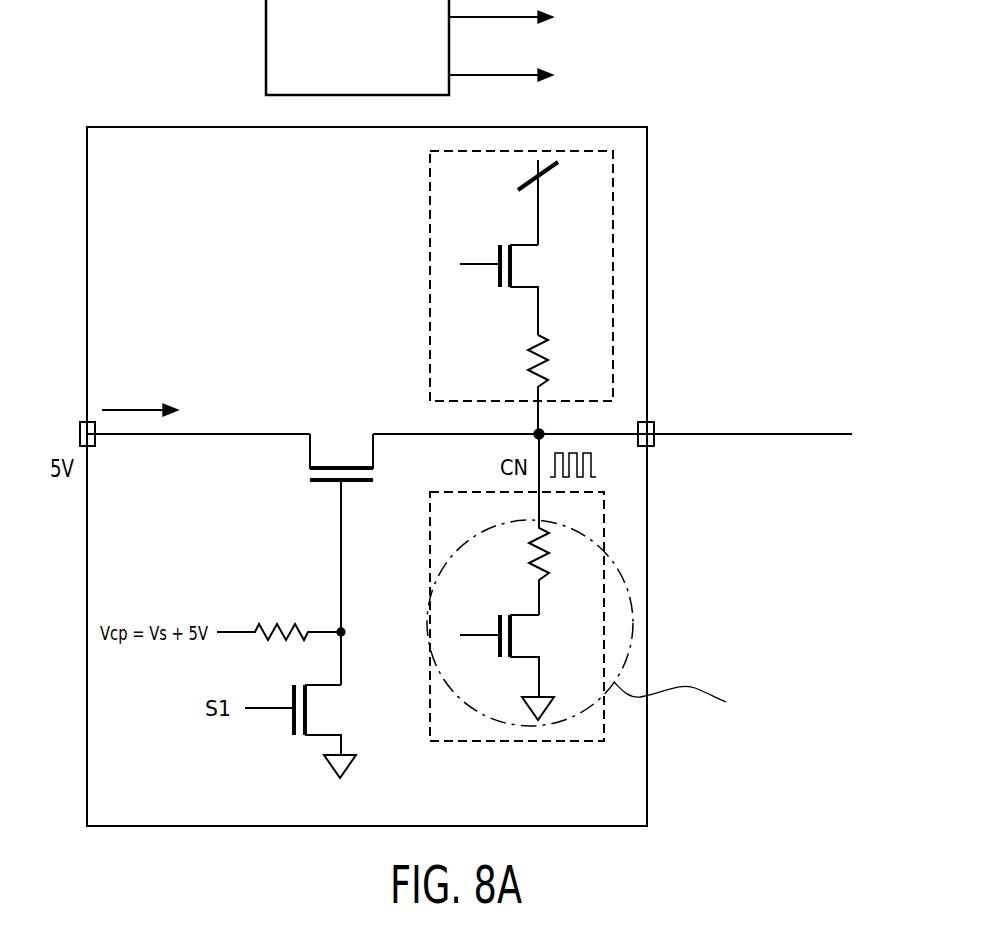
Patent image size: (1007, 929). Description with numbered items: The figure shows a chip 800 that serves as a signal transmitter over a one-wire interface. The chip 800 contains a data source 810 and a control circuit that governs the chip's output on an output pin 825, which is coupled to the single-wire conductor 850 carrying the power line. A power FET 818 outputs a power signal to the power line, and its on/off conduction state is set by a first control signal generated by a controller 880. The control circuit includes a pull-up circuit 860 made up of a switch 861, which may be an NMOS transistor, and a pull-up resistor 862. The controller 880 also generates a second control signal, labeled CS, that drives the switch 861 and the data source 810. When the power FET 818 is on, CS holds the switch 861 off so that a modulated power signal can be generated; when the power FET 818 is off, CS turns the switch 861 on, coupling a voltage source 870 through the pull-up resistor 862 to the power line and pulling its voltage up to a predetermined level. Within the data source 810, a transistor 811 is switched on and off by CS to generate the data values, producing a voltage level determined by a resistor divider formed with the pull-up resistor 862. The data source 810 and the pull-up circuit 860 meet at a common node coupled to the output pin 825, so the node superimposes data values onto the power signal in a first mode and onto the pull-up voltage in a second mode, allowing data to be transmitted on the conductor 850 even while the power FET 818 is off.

The chip 800 is at (647, 155).
The data source 810 is at (535, 741).
The transistor 811 is at (523, 615).
The power FET 818 is at (310, 452).
The output pin 825 is at (651, 446).
The single-wire conductor 850 is at (702, 433).
The pull-up circuit 860 is at (430, 226).
The switch 861 is at (524, 244).
The pull-up resistor 862 is at (548, 372).
The voltage source 870 is at (544, 174).
The controller 880 is at (266, 34).